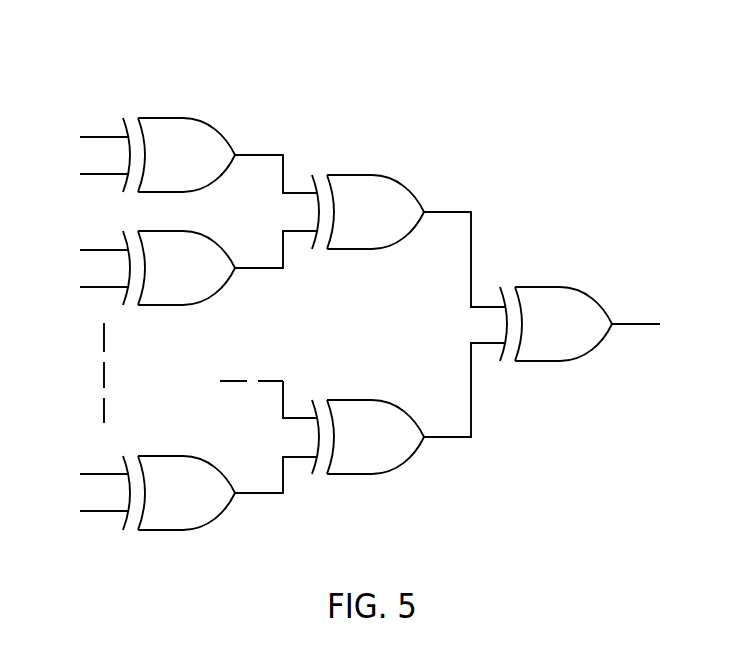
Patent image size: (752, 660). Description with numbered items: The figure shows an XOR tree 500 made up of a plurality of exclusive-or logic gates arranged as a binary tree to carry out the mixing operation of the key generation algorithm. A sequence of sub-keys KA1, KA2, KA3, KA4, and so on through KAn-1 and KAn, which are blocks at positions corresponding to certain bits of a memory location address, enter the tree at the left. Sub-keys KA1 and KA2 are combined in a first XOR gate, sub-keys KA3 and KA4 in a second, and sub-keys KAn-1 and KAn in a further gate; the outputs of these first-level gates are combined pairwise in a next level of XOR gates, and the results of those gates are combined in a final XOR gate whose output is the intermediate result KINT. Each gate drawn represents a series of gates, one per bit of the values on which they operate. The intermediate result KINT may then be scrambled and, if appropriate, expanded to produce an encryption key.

The XOR tree 500 is at (367, 285).
The sub-key KA1 is at (87, 137).
The sub-key KA2 is at (87, 173).
The sub-key KA3 is at (87, 250).
The sub-key KA4 is at (87, 286).
The sub-key KAn-1 is at (81, 474).
The sub-key KAn is at (87, 510).
The intermediate result KINT is at (655, 324).